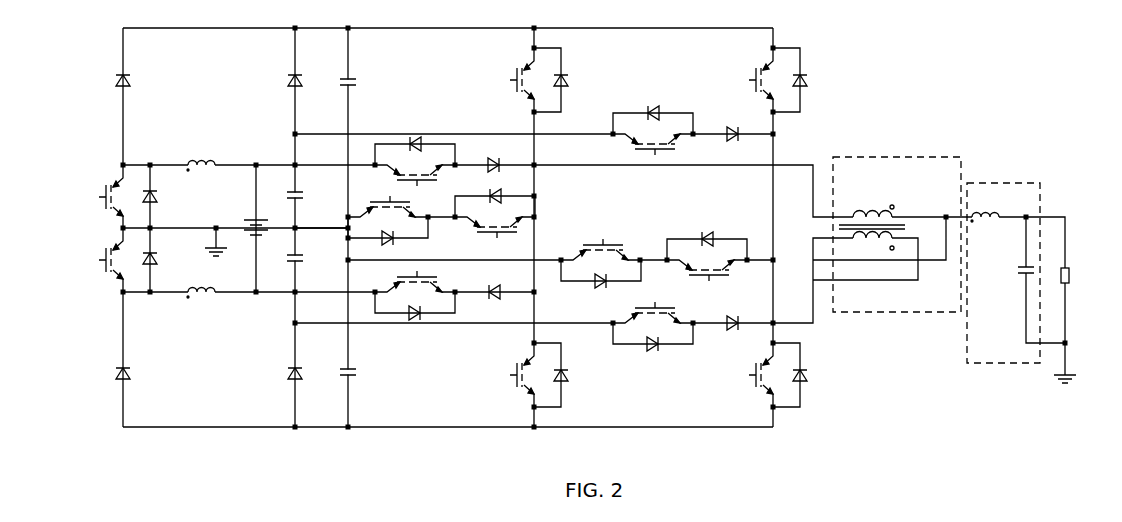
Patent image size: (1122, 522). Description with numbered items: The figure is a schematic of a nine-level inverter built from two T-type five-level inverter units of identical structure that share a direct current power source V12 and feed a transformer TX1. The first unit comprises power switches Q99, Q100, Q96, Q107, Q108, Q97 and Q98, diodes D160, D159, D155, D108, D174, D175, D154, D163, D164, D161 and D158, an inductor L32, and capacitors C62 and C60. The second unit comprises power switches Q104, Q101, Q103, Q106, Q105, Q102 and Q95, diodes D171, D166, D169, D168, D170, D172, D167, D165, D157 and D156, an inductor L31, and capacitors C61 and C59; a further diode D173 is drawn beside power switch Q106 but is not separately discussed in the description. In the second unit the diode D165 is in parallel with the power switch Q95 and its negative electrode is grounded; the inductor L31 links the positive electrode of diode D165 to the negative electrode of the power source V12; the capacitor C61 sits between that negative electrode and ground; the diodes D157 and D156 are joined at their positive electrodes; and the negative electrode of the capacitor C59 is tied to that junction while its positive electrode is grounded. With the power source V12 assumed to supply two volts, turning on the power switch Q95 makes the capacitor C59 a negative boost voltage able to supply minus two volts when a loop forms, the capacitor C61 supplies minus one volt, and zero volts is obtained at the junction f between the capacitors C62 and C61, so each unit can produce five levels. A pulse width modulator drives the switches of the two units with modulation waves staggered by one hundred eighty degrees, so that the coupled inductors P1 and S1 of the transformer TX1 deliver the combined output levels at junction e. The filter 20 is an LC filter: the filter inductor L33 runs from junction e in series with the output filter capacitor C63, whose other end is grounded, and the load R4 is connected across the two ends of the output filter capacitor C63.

The diode D161 is at (145, 80).
The diode D158 is at (314, 73).
The capacitor C60 is at (368, 73).
The power switch Q99 is at (535, 80).
The diode D160 is at (572, 80).
The diode D169 is at (653, 111).
The power switch Q103 is at (653, 137).
The diode D168 is at (734, 144).
The power switch Q104 is at (783, 80).
The diode D171 is at (811, 80).
The power switch Q98 is at (127, 197).
The diode D164 is at (170, 198).
The inductor L32 is at (209, 176).
The capacitor C62 is at (310, 195).
The power source V12 is at (266, 220).
The junction f is at (321, 220).
The power switch Q95 is at (127, 260).
The diode D165 is at (170, 260).
The capacitor C61 is at (310, 255).
The inductor L31 is at (204, 303).
The diode D157 is at (145, 375).
The diode D156 is at (315, 368).
The capacitor C59 is at (365, 370).
The diode D155 is at (415, 141).
The power switch Q96 is at (415, 170).
The diode D175 is at (494, 156).
The power switch Q107 is at (388, 213).
The diode D174 is at (388, 239).
The diode D108 is at (495, 206).
The power switch Q108 is at (495, 237).
The diode D163 is at (496, 284).
The power switch Q97 is at (415, 288).
The diode D154 is at (415, 317).
The power switch Q106 is at (601, 257).
The diode D173 is at (601, 282).
The diode D172 is at (707, 236).
The power switch Q105 is at (707, 265).
The diode D167 is at (737, 313).
The power switch Q102 is at (653, 319).
The diode D170 is at (653, 346).
The power switch Q100 is at (544, 375).
The diode D159 is at (572, 375).
The power switch Q101 is at (783, 375).
The diode D166 is at (811, 375).
The transformer TX1 is at (961, 165).
The filter 20 is at (1040, 187).
The coupled inductor P1 is at (873, 208).
The coupled inductor S1 is at (873, 246).
The junction e is at (946, 209).
The filter inductor L33 is at (988, 227).
The output filter capacitor C63 is at (1041, 262).
The load R4 is at (1078, 276).